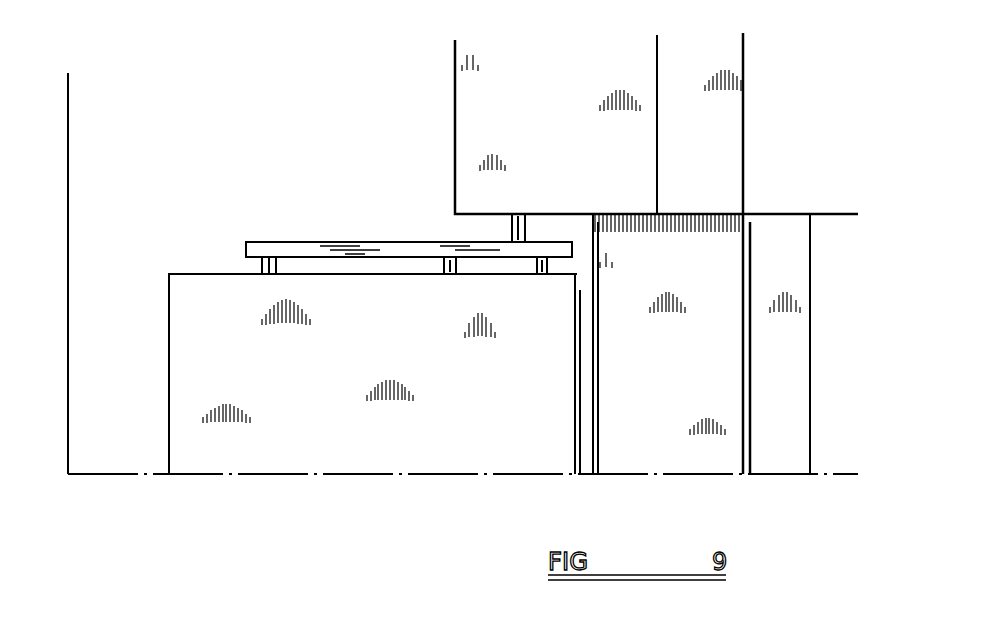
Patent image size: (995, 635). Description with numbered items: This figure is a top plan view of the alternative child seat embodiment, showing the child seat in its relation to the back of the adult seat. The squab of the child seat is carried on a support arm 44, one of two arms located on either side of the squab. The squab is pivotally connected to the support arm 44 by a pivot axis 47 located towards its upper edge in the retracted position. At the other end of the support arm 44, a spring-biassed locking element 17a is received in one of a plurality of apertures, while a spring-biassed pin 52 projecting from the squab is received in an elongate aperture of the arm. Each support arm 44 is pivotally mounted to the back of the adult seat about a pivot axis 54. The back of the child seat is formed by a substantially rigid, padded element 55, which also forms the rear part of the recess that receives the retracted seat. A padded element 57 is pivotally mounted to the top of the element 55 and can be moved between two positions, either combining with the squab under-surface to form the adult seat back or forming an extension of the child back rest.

The support arm 44 is at (360, 250).
The pivot axis 47 is at (286, 260).
The pin 52 is at (436, 258).
The pivot axis 54 is at (522, 227).
The spring-biassed locking element 17a is at (536, 265).
The rigid element 55 is at (672, 437).
The padded element 57 is at (777, 228).